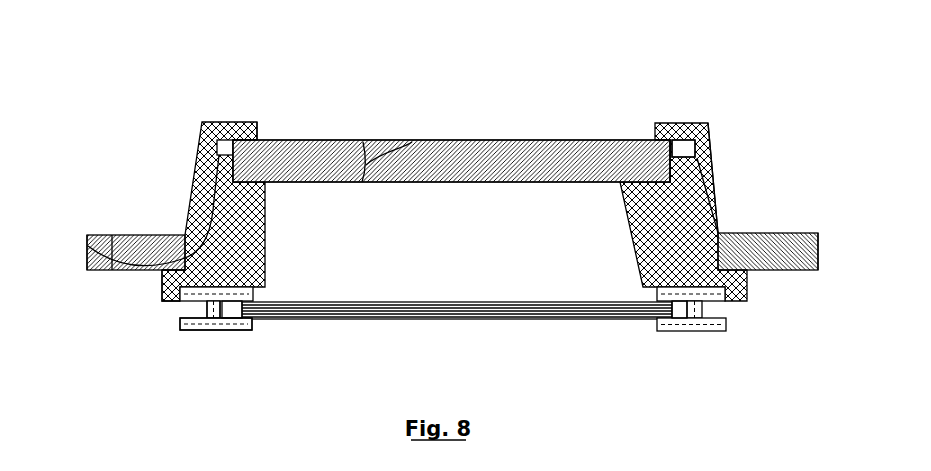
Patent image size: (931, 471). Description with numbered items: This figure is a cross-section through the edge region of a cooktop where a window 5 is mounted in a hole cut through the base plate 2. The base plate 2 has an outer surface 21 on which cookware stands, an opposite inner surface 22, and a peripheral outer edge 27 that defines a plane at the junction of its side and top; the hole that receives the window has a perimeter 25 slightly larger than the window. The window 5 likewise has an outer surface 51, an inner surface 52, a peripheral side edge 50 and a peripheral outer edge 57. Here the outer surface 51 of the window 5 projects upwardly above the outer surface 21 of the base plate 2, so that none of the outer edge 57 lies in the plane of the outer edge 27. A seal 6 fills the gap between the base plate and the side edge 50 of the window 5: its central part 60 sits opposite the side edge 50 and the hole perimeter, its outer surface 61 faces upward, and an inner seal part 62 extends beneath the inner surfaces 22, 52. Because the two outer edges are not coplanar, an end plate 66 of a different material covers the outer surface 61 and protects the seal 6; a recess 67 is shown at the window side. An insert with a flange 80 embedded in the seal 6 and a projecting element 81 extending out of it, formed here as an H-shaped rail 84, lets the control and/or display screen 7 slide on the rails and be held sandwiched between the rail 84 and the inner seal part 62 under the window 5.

The base plate 2 is at (147, 237).
The window 5 is at (567, 160).
The seal 6 is at (203, 103).
The control and/or display screen 7 is at (420, 313).
The outer surface of the base plate 21 is at (98, 235).
The inner surface of the base plate 22 is at (112, 237).
The perimeter of the hole 25 is at (88, 245).
The peripheral outer edge of the base plate 27 is at (727, 233).
The peripheral side edge of the window 50 is at (257, 150).
The outer surface of the window 51 is at (363, 142).
The inner surface of the window 52 is at (412, 142).
The peripheral outer edge of the window 57 is at (672, 138).
The central part of the seal 60 is at (160, 277).
The outer surface of the seal 61 is at (807, 233).
The inner seal part 62 is at (120, 302).
The end plate 66 is at (713, 170).
The wall recess 67 is at (684, 150).
The flange 80 is at (252, 298).
The projecting element 81 is at (165, 322).
The H-shaped rail 84 is at (217, 330).